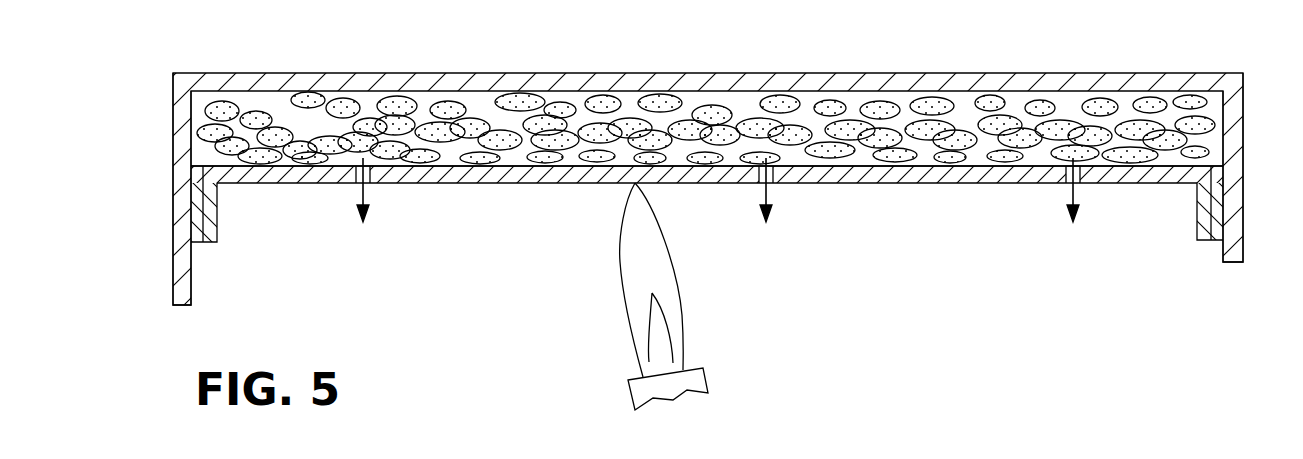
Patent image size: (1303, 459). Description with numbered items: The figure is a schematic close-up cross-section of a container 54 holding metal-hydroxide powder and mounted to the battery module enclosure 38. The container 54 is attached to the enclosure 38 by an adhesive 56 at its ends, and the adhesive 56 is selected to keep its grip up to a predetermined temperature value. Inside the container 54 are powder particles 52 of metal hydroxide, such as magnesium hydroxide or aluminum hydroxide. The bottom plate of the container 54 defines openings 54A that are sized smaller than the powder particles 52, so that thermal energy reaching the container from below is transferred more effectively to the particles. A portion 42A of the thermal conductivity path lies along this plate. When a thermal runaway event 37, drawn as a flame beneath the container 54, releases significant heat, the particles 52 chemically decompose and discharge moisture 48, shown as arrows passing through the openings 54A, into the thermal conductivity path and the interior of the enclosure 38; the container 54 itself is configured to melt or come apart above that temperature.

The thermal runaway event 37 is at (632, 282).
The battery module enclosure 38 is at (920, 80).
The portion of the thermal conductivity path 42A is at (616, 160).
The moisture 48 is at (368, 193).
The powder particles 52 is at (1188, 120).
The container 54 is at (218, 221).
The openings 54A is at (358, 186).
The adhesive 56 is at (198, 205).